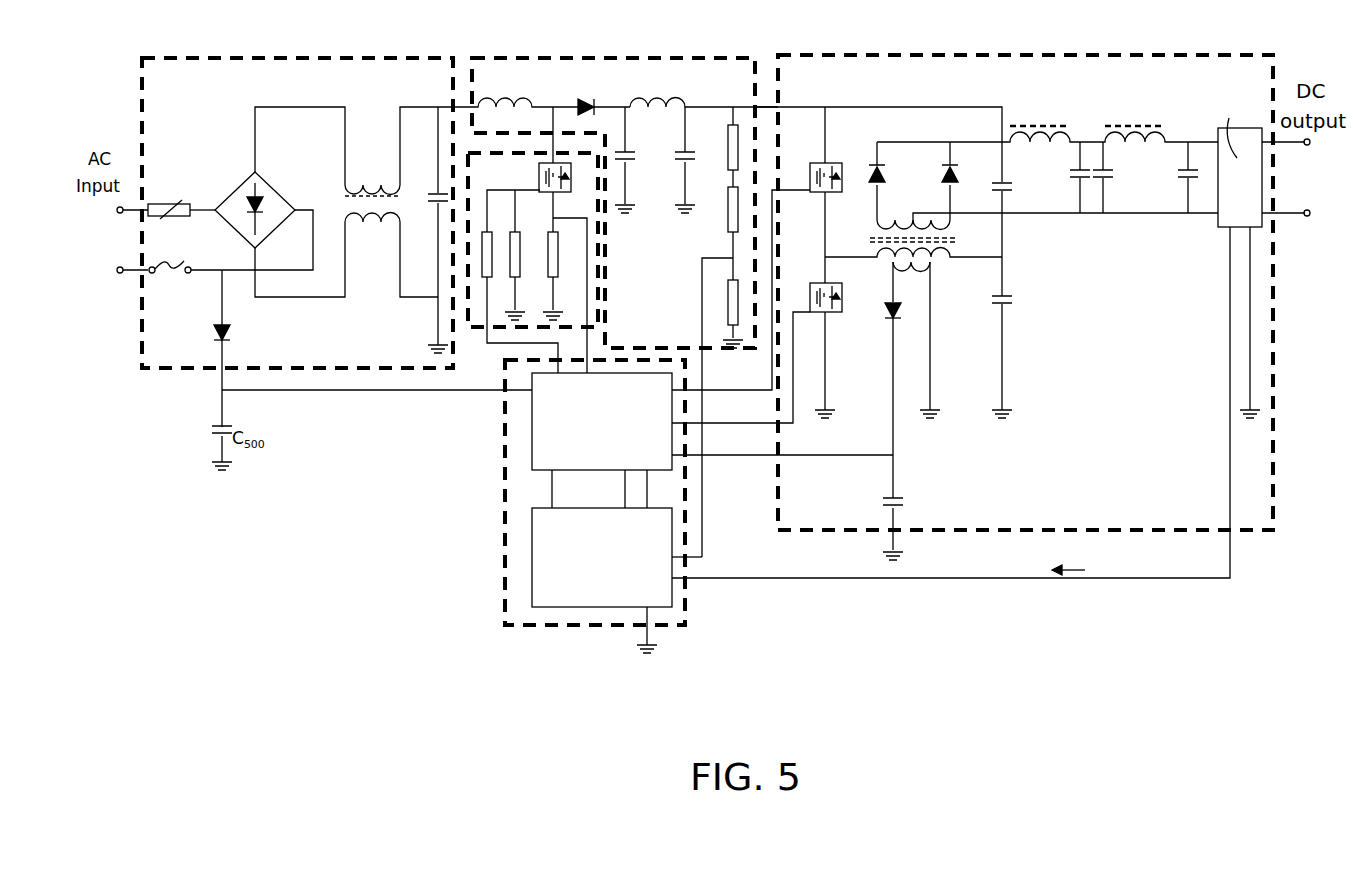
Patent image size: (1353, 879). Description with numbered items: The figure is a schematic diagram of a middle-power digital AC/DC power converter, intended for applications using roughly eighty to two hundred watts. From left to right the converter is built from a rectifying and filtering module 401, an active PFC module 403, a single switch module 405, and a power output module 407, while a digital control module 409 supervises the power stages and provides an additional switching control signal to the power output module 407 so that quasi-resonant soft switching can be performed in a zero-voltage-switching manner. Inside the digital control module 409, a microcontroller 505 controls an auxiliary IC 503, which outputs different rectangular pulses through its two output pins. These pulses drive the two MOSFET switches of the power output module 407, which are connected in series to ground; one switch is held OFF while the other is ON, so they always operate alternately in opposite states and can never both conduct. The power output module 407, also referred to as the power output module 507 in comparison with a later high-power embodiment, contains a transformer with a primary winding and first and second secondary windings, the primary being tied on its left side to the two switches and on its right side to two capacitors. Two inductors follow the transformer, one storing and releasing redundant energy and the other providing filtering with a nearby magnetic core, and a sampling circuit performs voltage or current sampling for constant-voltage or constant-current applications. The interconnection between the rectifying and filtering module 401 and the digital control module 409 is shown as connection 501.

The rectifying and filtering module 401 is at (282, 60).
The active PFC module 403 is at (566, 68).
The single switch module 405 is at (478, 316).
The power output module 407 is at (851, 72).
The digital control module 409 is at (514, 612).
The connection line 501 is at (355, 385).
The auxiliary IC 503 is at (602, 421).
The microcontroller 505 is at (602, 557).
The power output module 507 is at (793, 585).